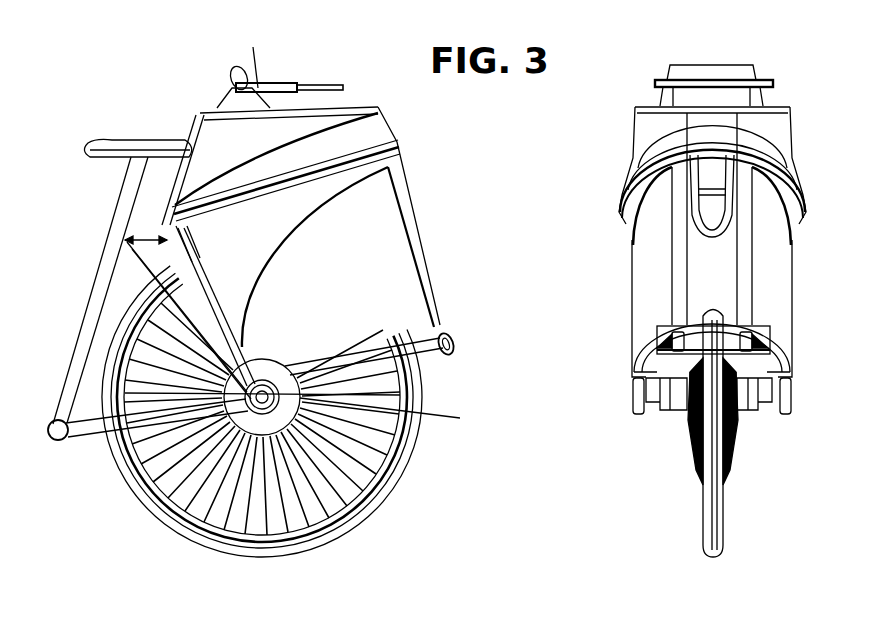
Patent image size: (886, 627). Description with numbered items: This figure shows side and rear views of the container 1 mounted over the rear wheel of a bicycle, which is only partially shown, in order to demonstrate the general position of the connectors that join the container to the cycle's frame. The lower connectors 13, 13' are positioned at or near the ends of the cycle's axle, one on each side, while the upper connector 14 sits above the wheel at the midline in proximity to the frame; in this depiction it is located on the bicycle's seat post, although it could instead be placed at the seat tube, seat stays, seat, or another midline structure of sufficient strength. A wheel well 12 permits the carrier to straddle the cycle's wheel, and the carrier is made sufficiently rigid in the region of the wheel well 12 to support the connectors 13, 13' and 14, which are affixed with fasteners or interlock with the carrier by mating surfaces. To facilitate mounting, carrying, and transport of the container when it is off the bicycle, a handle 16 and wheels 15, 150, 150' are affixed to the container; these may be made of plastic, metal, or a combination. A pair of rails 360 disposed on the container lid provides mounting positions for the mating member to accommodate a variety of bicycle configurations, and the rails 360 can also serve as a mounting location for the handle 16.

The container 1 is at (502, 563).
The wheel well wall 12 is at (700, 334).
The lower connector 13 is at (483, 418).
The lower connector 13' is at (753, 434).
The upper connector 14 is at (172, 223).
The wheel 15 is at (455, 340).
The handle 16 is at (248, 48).
The wheel 150 is at (349, 441).
The wheel 150' is at (821, 378).
The pair of rails 360 is at (198, 117).